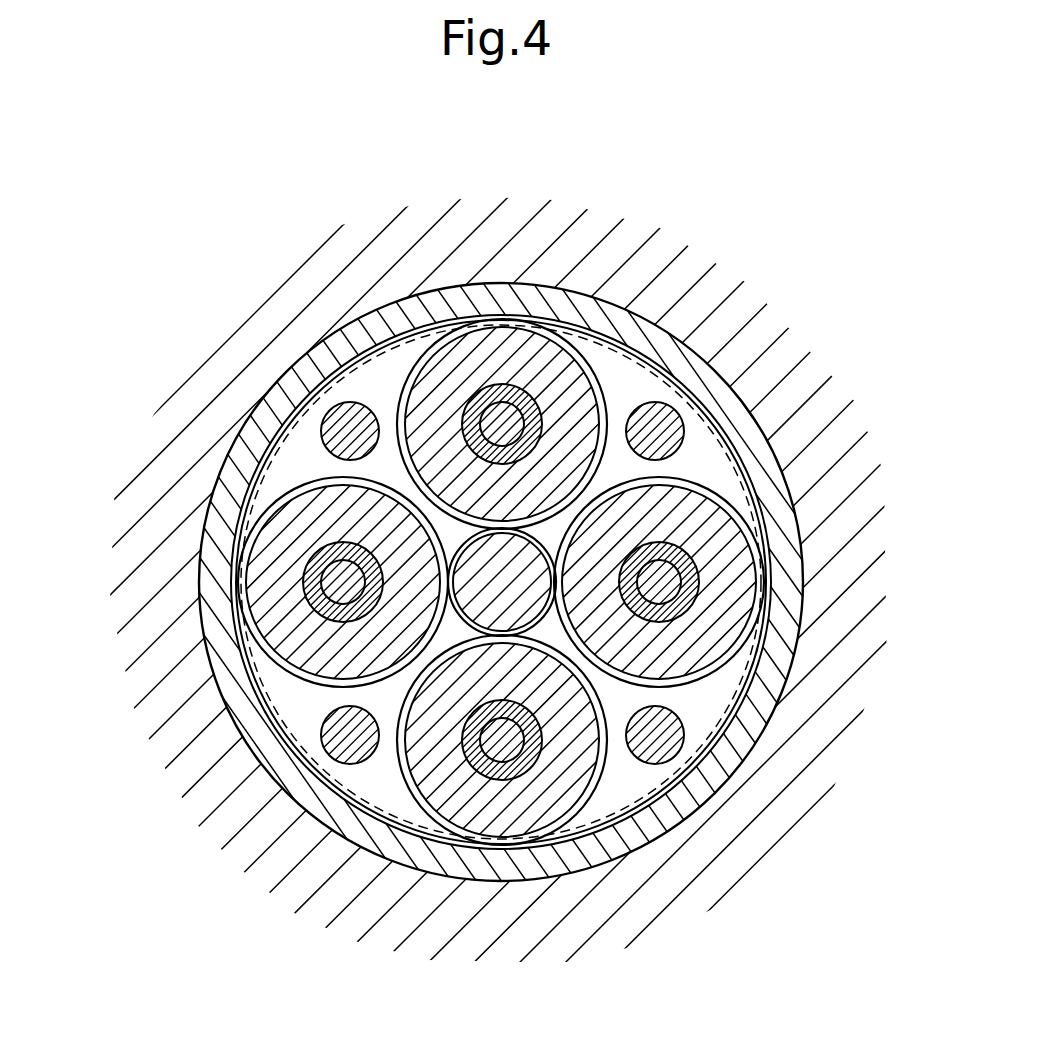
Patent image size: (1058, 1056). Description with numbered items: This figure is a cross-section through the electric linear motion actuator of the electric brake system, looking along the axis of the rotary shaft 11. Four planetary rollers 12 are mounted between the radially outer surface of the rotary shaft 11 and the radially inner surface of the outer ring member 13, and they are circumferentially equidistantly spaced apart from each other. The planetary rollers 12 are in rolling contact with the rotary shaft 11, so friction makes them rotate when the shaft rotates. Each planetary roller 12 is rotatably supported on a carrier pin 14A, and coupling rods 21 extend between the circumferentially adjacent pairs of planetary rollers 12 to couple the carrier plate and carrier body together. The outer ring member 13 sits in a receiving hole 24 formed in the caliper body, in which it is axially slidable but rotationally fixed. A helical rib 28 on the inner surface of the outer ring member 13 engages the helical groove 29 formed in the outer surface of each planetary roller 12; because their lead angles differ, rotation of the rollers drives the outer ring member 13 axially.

The rotary shaft 11 is at (462, 572).
The planetary roller 12 is at (529, 528).
The outer ring member 13 is at (258, 748).
The carrier pin 14A is at (280, 625).
The coupling rod 21 is at (665, 740).
The receiving hole 24 is at (340, 800).
The helical rib 28 is at (387, 817).
The helical groove 29 is at (451, 821).